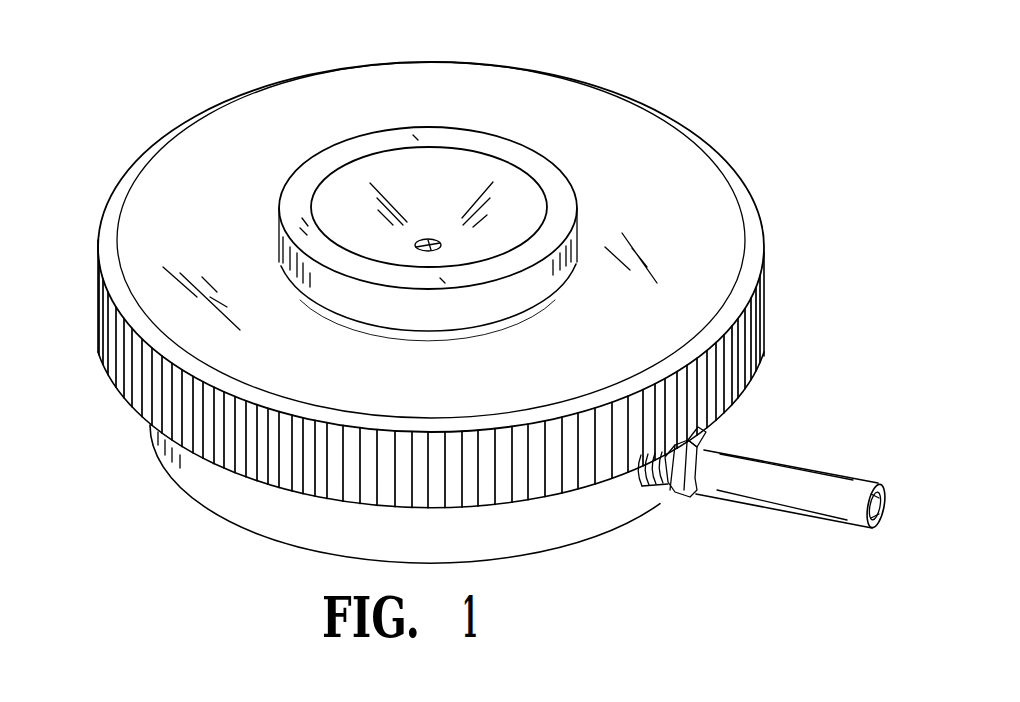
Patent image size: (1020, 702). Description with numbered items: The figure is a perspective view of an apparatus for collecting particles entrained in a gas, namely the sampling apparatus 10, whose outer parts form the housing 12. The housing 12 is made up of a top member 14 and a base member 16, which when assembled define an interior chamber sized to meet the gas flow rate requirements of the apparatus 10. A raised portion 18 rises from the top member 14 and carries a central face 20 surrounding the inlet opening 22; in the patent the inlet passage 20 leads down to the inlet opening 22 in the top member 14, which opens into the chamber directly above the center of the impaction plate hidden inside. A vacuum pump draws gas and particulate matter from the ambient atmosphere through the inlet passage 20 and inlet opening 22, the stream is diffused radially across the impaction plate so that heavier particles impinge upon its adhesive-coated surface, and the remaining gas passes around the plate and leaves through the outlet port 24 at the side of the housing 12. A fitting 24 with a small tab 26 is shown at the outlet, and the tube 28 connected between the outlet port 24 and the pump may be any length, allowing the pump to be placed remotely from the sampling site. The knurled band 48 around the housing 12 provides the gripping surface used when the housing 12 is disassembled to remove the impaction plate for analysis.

The sampling apparatus 10 is at (465, 307).
The housing 12 is at (444, 285).
The top member 14 is at (718, 216).
The base member 16 is at (560, 535).
The raised central boss 18 is at (428, 212).
The inlet passage 20 is at (429, 175).
The inlet opening 22 is at (431, 241).
The outlet port 24 is at (646, 486).
The locking tab 26 is at (705, 431).
The tube 28 is at (803, 483).
The knurled grip band 48 is at (128, 375).